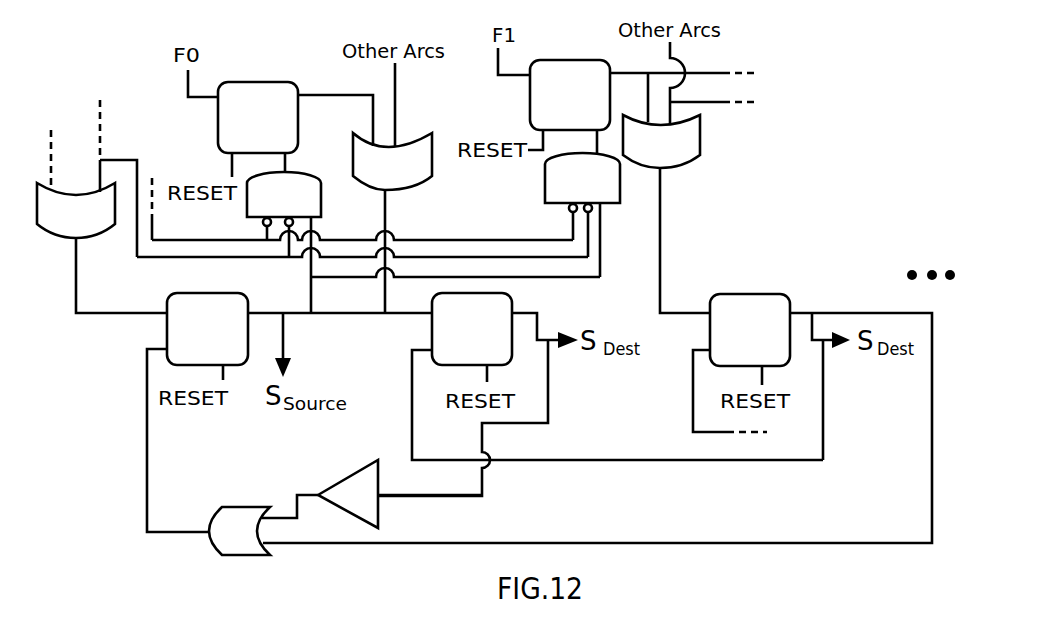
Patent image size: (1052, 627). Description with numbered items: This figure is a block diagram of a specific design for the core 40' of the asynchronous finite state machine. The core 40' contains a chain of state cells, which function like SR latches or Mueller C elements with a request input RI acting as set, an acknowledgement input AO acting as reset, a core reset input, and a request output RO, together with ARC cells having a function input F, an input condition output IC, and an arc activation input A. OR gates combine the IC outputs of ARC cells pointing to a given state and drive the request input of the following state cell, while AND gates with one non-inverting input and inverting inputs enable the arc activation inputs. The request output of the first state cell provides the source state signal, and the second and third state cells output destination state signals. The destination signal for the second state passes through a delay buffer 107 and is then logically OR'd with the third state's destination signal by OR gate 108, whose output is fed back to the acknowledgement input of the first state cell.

The core 40' is at (117, 51).
The delay buffer 107 is at (375, 506).
The OR gate 108 is at (253, 541).